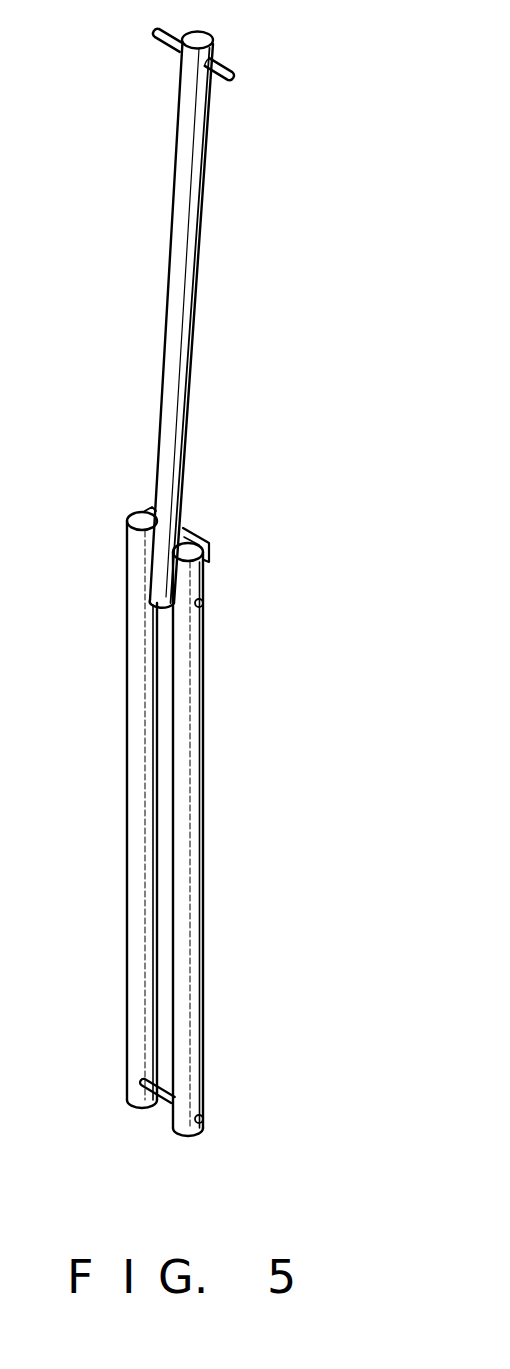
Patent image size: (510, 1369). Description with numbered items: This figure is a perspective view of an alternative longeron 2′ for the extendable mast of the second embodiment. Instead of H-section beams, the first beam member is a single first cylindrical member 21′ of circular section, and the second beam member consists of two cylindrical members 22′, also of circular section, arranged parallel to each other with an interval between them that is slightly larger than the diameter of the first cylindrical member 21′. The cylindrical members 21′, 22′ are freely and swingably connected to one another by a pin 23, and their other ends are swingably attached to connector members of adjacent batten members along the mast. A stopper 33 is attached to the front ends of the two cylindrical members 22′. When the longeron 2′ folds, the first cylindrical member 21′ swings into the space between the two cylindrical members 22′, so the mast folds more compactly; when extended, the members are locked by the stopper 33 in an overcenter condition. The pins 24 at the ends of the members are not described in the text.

The longeron 2′ is at (257, 540).
The first cylindrical member 21′ is at (202, 329).
The cylindrical members 22′ is at (127, 907).
The pin 23 is at (205, 605).
The cross pin 24 is at (237, 74).
The stopper 33 is at (201, 532).